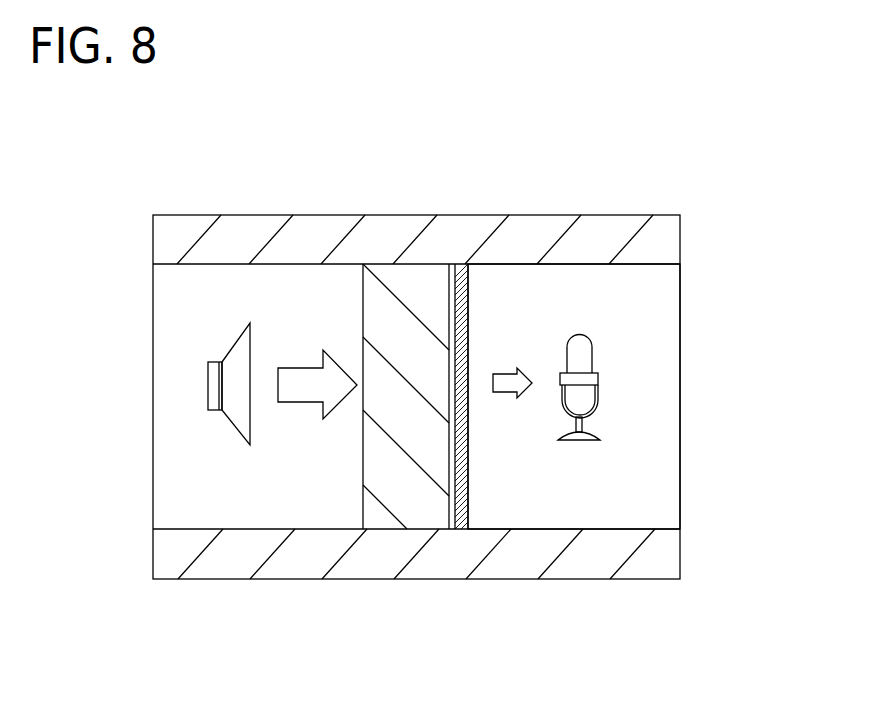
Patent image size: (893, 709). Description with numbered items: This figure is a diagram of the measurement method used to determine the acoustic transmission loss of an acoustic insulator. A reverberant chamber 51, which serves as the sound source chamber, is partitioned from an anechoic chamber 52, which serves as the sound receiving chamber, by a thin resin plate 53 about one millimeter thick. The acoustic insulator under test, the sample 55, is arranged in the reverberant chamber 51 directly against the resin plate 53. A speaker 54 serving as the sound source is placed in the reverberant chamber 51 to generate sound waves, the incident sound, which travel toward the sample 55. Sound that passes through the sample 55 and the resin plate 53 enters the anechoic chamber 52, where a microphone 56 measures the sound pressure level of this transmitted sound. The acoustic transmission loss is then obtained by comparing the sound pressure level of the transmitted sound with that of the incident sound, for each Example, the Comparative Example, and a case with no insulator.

The reverberant chamber 51 is at (172, 449).
The anechoic chamber 52 is at (585, 505).
The resin plate 53 is at (468, 487).
The speaker 54 is at (232, 425).
The sample 55 is at (417, 505).
The microphone 56 is at (600, 375).